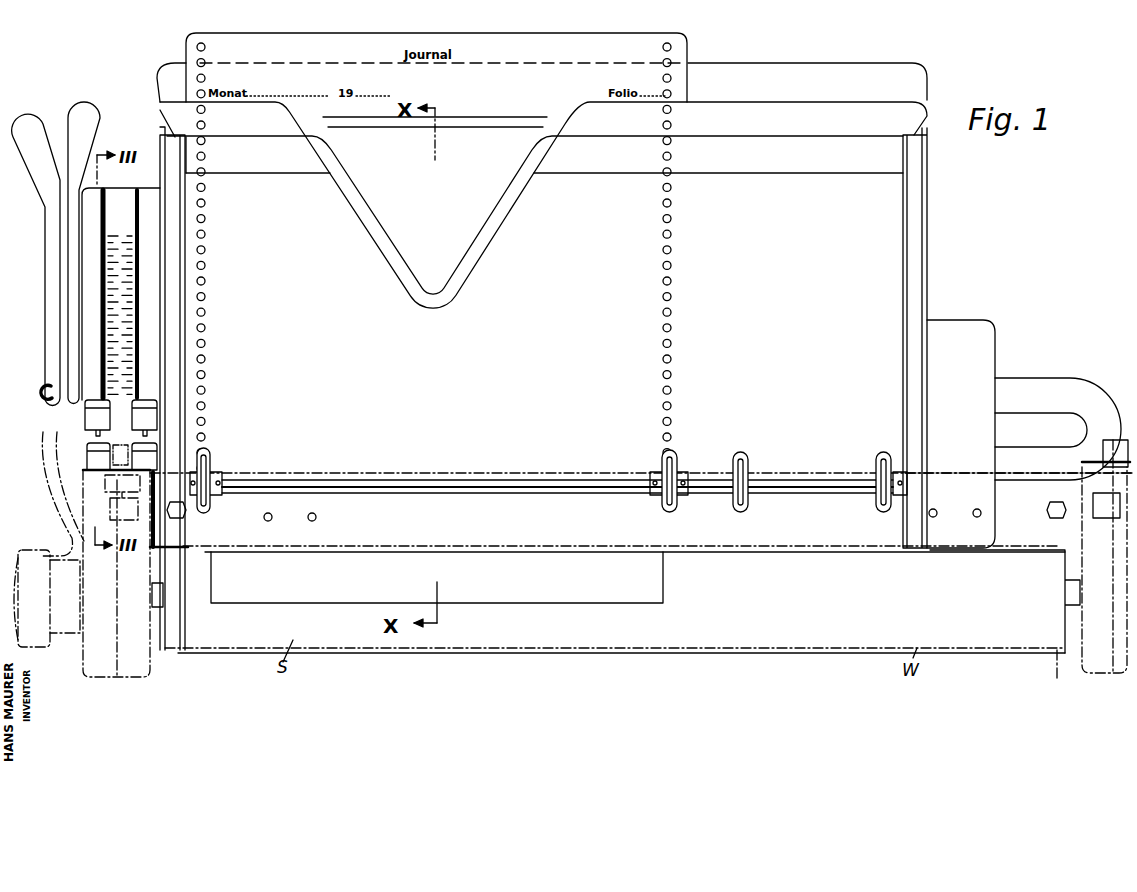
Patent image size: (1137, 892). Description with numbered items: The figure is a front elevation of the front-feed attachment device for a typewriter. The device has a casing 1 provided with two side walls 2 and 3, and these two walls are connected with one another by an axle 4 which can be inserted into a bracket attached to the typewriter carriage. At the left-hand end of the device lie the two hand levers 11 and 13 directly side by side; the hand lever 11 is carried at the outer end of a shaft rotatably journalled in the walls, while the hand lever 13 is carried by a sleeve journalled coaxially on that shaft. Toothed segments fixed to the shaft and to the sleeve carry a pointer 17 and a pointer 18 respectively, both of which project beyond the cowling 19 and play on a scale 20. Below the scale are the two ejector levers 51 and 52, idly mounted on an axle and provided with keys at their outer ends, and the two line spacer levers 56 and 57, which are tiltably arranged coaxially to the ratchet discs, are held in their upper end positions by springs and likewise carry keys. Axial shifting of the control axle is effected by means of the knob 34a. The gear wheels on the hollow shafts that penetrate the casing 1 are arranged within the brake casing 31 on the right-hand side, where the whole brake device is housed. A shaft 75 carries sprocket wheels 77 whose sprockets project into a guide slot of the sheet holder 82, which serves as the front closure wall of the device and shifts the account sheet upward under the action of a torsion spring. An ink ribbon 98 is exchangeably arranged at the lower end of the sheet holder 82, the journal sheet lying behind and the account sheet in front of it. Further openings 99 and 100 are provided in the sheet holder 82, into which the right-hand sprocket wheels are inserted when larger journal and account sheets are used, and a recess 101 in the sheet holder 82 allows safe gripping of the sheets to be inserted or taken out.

The casing 1 is at (835, 82).
The side wall 2 is at (173, 157).
The side wall 3 is at (917, 200).
The axle 4 is at (1045, 386).
The hand lever 11 is at (27, 118).
The hand lever 13 is at (90, 107).
The pointer 17 is at (138, 190).
The pointer 18 is at (104, 190).
The cowling 19 is at (90, 228).
The scale 20 is at (103, 265).
The brake casing 31 is at (982, 330).
The knob 34a is at (45, 390).
The ejector lever 51 is at (150, 462).
The ejector lever 52 is at (108, 460).
The line spacer lever 56 is at (152, 408).
The line spacer lever 57 is at (98, 415).
The shaft 75 is at (420, 483).
The sprocket wheels 77 is at (210, 497).
The sheet holder 82 is at (870, 248).
The ink ribbon 98 is at (650, 573).
The opening 99 is at (743, 497).
The opening 100 is at (885, 497).
The recess 101 is at (483, 227).